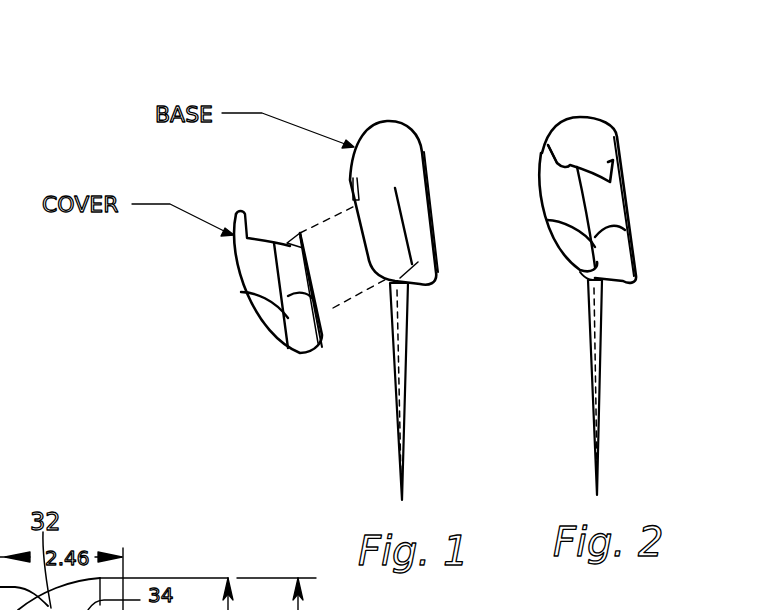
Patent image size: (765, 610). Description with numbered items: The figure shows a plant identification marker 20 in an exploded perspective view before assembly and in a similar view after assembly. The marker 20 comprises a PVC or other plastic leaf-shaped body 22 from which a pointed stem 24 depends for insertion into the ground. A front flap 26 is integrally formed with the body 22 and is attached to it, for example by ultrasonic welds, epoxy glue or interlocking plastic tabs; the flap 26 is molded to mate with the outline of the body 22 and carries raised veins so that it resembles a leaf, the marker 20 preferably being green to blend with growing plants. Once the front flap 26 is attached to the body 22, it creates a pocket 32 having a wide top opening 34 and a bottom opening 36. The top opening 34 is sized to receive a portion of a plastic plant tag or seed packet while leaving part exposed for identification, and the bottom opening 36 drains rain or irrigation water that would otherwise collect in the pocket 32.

In FIG. 1, the plant identification marker 20 is at (413, 98).
In FIG. 2, the plant identification marker 20 is at (597, 96).
In FIG. 1, the leaf-shaped body 22 is at (424, 161).
In FIG. 2, the leaf-shaped body 22 is at (620, 134).
In FIG. 1, the pointed stem 24 is at (410, 381).
In FIG. 2, the pointed stem 24 is at (605, 381).
In FIG. 1, the front flap 26 is at (262, 322).
In FIG. 2, the front flap 26 is at (567, 238).
In FIG. 2, the pocket 32 is at (580, 149).
In FIG. 2, the top opening 34 is at (548, 165).
In FIG. 2, the bottom opening 36 is at (585, 278).